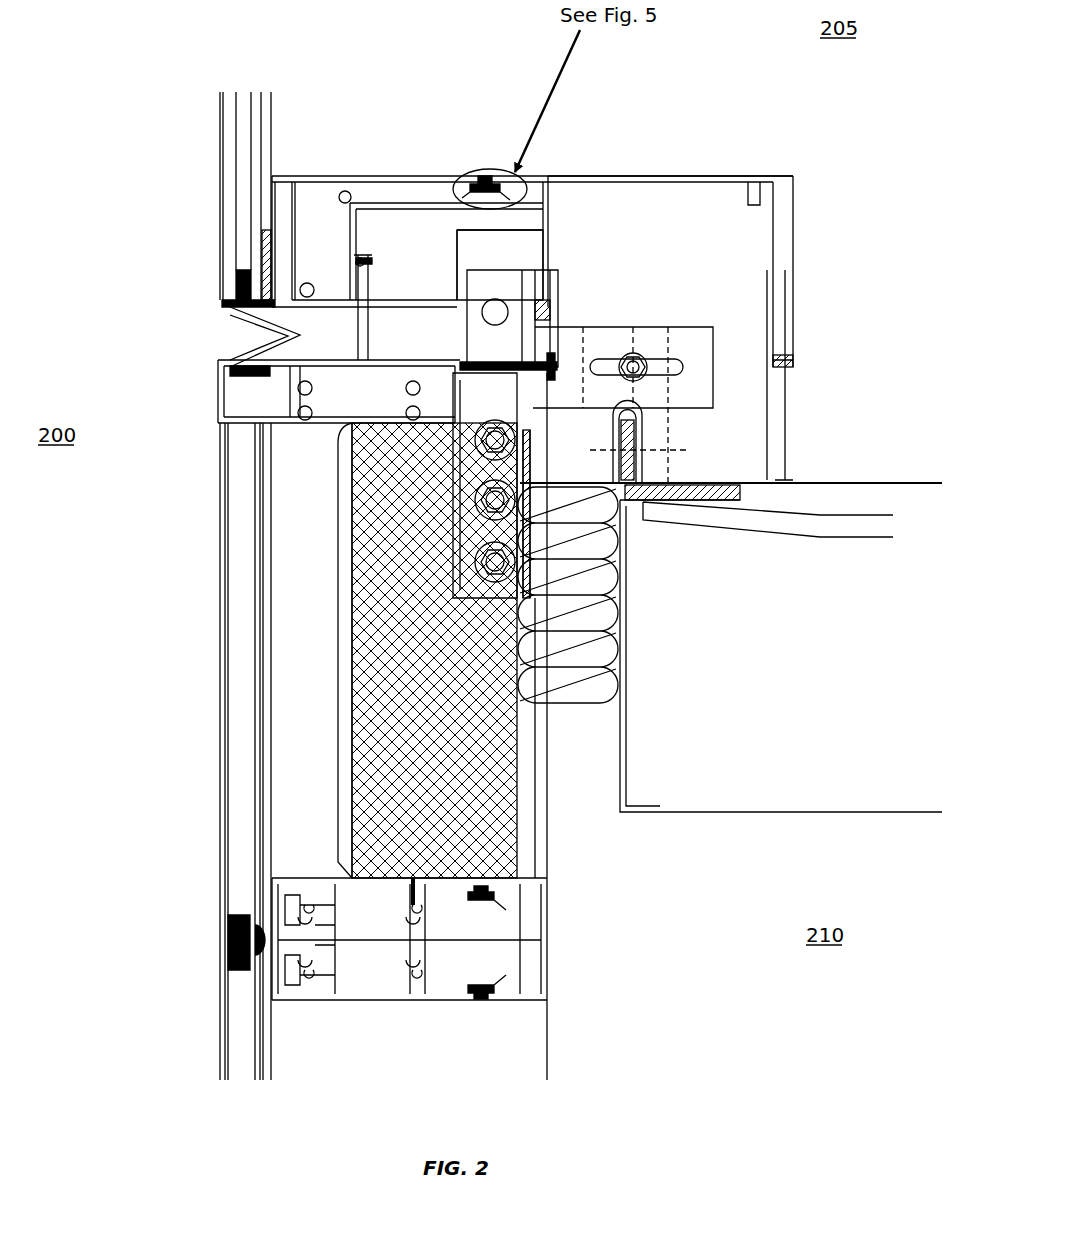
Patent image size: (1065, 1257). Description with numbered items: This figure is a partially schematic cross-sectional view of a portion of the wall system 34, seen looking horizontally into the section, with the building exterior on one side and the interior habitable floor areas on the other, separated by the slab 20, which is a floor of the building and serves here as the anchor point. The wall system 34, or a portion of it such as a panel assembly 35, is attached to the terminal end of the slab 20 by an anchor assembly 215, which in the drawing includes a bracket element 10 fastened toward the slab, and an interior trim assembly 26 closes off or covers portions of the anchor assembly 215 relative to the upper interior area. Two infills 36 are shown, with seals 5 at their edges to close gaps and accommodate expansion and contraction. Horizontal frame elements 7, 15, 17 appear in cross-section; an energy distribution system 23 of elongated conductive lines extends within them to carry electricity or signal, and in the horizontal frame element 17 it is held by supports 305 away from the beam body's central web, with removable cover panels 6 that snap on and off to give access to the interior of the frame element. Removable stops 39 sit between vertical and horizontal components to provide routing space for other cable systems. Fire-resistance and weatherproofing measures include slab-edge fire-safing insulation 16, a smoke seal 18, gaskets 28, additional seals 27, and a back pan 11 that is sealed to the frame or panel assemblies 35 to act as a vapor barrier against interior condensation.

The seal 5 is at (247, 335).
The cover panel 6 is at (325, 175).
The horizontal frame element 7 is at (555, 222).
The anchor bracket 10 is at (710, 315).
The back pan 11 is at (672, 418).
The horizontal frame element 15 is at (310, 430).
The slab-edge fire-safing insulation 16 is at (545, 660).
The horizontal frame element 17 is at (550, 945).
The smoke seal 18 is at (648, 500).
The slab 20 is at (655, 695).
The energy distribution system 23 is at (520, 180).
The interior trim assembly 26 is at (800, 175).
The additional seal 27 is at (280, 258).
The gasket 28 is at (282, 222).
The wall system 34 is at (187, 48).
The panel assembly 35 is at (170, 192).
The infill 36 is at (215, 155).
The removable stop 39 is at (285, 398).
The anchor assembly 215 is at (733, 330).
The support 305 is at (515, 190).